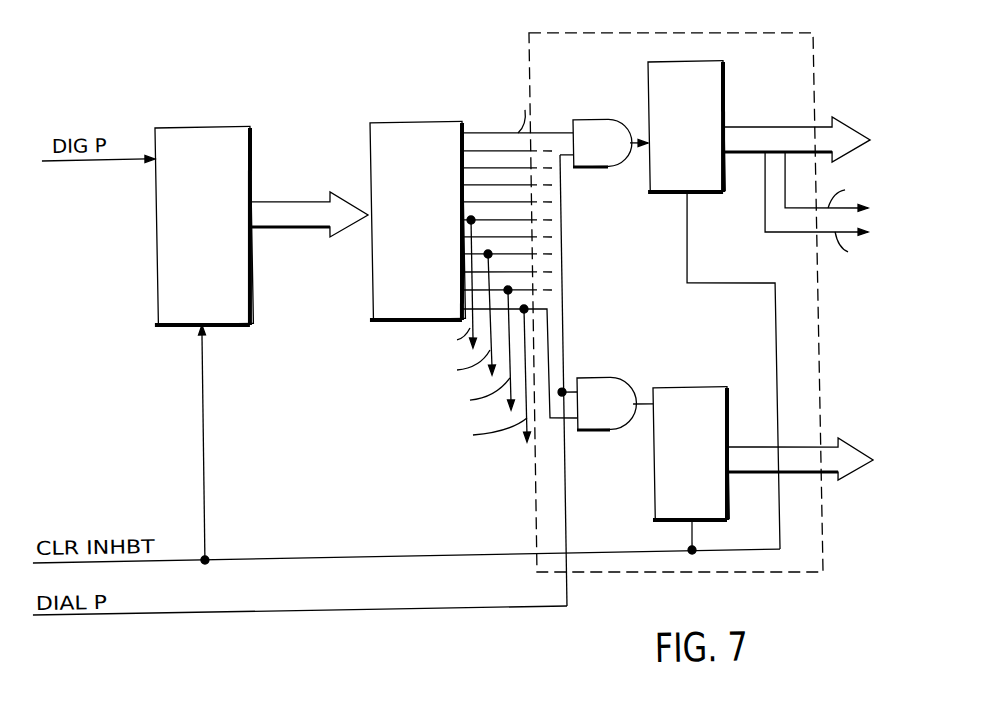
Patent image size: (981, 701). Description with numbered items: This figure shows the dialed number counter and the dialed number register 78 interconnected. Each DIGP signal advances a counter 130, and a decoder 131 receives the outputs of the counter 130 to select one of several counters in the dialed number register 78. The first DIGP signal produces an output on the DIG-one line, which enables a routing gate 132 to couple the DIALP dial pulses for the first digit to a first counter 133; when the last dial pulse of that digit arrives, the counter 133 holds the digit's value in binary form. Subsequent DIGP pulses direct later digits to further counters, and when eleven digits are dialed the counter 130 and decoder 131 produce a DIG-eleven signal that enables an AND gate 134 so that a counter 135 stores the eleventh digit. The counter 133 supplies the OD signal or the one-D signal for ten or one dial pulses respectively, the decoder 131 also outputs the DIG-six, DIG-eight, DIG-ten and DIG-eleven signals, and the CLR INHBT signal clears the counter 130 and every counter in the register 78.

The dialed number register 78 is at (545, 59).
The counter 130 is at (204, 123).
The decoder 131 is at (404, 120).
The routing gate 132 is at (584, 130).
The first counter 133 is at (728, 79).
The AND gate 134 is at (599, 392).
The counter 135 is at (696, 399).